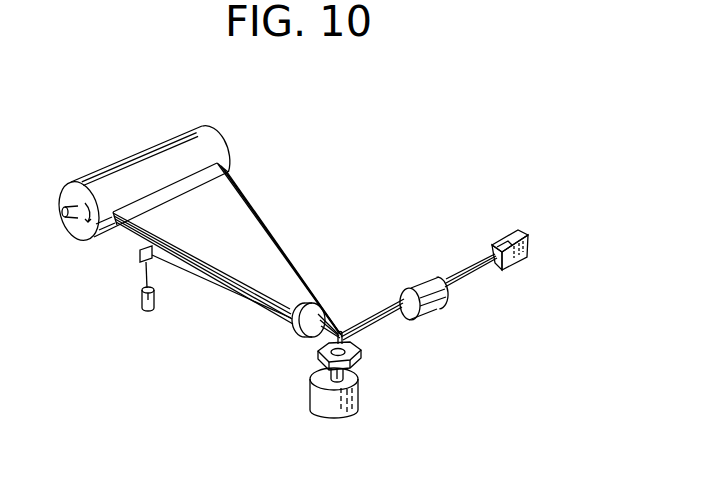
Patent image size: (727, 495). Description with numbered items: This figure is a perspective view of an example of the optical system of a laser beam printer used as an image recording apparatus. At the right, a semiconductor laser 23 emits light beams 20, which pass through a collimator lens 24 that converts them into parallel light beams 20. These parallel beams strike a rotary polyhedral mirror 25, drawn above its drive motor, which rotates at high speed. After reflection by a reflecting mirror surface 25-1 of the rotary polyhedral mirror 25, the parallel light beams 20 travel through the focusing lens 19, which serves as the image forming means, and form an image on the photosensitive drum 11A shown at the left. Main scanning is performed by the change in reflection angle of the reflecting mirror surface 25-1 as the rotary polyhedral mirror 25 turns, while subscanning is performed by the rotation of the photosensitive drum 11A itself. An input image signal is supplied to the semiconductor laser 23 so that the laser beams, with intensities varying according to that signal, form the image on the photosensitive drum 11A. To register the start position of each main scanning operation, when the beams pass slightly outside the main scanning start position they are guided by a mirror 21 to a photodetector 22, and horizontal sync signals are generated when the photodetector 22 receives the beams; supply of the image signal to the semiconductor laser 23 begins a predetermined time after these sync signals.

The photosensitive drum 11A is at (83, 238).
The focusing lens 19 is at (292, 335).
The light beams 20 is at (189, 274).
The mirror 21 is at (140, 256).
The photodetector 22 is at (155, 298).
The semiconductor laser 23 is at (503, 236).
The collimator lens 24 is at (410, 287).
The rotary polyhedral mirror 25 is at (320, 353).
The reflecting mirror surface 25-1 is at (342, 333).